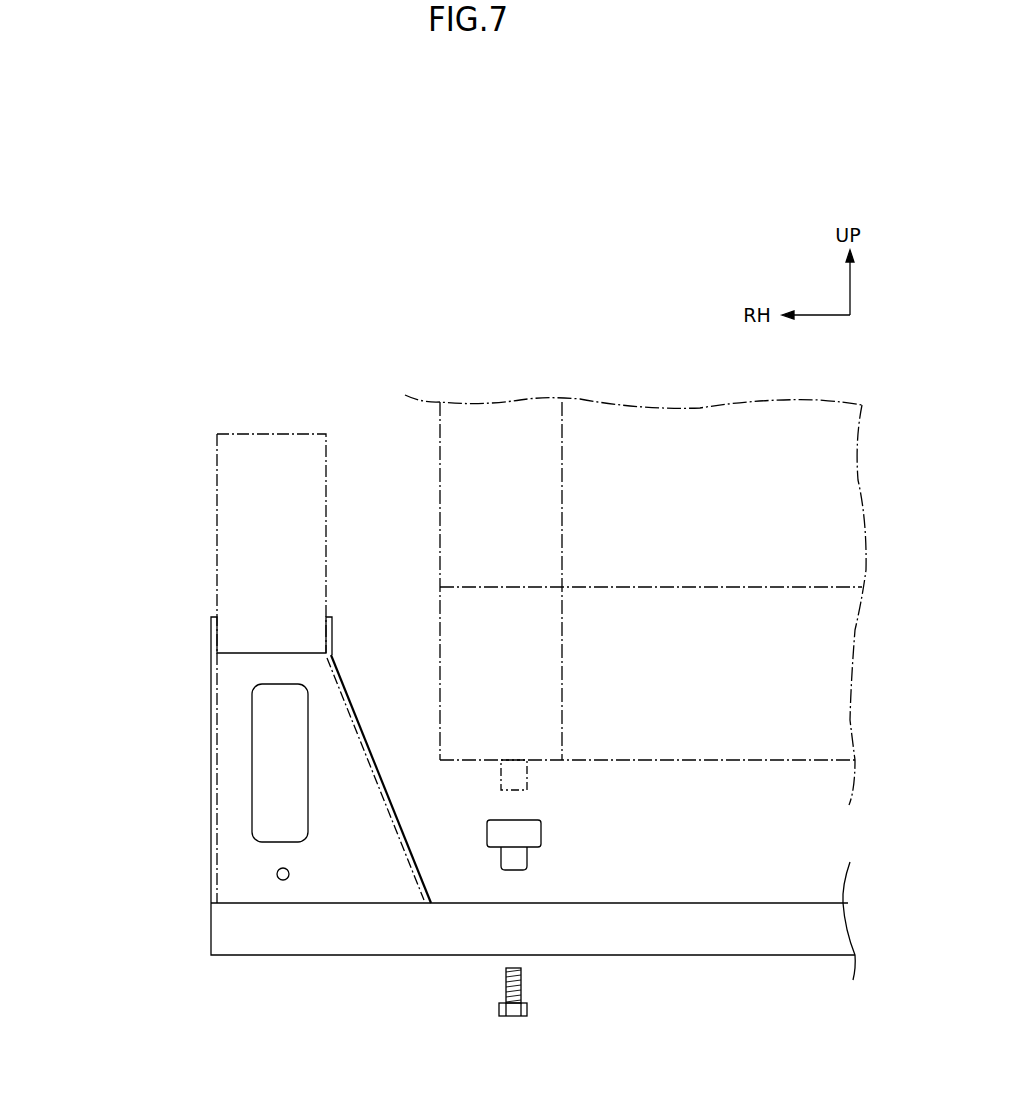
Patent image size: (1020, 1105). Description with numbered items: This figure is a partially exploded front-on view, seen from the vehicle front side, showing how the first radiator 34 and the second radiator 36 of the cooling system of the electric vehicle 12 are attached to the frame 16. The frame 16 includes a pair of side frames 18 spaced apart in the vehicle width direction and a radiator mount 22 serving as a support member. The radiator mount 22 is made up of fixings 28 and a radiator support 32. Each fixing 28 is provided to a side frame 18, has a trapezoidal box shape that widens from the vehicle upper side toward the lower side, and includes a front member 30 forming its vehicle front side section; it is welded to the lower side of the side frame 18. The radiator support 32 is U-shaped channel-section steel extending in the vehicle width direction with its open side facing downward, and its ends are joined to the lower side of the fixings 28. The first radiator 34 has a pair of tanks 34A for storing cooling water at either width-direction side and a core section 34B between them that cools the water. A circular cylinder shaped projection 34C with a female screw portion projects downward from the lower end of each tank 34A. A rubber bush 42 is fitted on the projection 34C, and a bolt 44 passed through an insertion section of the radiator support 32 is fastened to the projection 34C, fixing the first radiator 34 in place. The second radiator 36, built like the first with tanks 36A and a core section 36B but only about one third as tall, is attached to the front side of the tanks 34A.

The vehicle 12 is at (105, 495).
The frame 16 is at (115, 518).
The side frame 18 is at (240, 433).
The radiator mount 22 is at (178, 822).
The fixing 28 is at (352, 700).
The front member 30 is at (350, 795).
The radiator support 32 is at (322, 935).
The first radiator 34 is at (432, 468).
The tank 34A is at (535, 452).
The core section 34B is at (653, 520).
The projection 34C is at (527, 784).
The second radiator 36 is at (752, 773).
The tank 36A is at (535, 640).
The core section 36B is at (653, 685).
The rubber bush 42 is at (541, 833).
The bolt 44 is at (527, 1008).